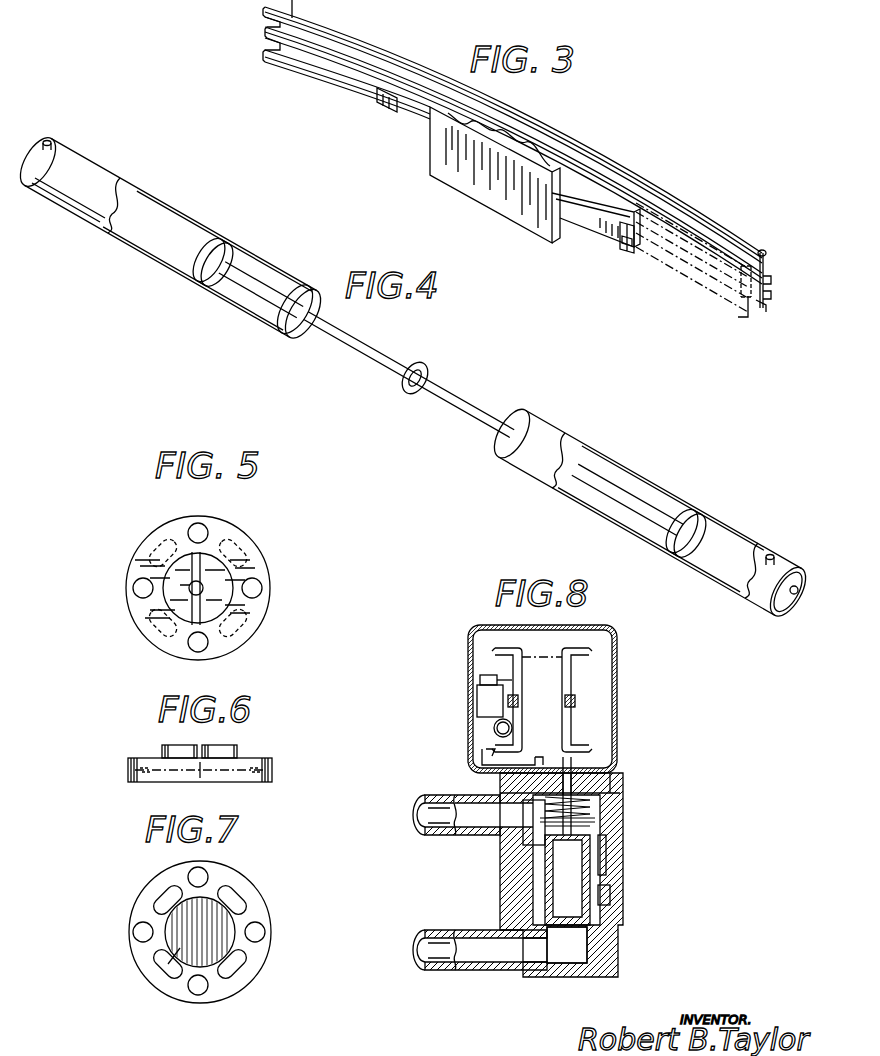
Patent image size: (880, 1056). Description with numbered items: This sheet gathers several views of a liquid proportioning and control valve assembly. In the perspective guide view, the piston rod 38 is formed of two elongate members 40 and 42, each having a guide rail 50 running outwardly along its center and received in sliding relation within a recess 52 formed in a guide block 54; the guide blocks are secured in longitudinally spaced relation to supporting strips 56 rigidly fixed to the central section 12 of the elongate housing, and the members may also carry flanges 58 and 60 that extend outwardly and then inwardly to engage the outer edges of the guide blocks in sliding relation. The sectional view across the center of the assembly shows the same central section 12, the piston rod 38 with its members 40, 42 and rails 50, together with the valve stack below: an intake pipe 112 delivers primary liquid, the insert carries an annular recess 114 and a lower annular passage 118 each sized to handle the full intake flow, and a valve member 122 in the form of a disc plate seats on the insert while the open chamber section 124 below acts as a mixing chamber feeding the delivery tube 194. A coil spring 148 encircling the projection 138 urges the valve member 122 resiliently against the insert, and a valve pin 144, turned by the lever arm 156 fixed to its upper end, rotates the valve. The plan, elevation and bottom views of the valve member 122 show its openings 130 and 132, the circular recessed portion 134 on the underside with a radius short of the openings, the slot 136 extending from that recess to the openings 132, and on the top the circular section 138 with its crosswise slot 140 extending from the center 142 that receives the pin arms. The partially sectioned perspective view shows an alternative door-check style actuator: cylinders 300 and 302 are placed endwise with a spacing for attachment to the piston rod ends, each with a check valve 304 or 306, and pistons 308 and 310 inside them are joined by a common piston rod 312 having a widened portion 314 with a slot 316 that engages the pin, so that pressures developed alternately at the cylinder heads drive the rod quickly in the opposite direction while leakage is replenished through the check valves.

In FIG. 3, the central section of the elongate housing 12 is at (463, 182).
In FIG. 8, the central section of the elongate housing 12 is at (617, 690).
In FIG. 3, the piston rod 38 is at (640, 215).
In FIG. 8, the piston rod 38 is at (575, 644).
In FIG. 3, the elongate member 40 is at (748, 317).
In FIG. 8, the elongate member 40 is at (522, 722).
In FIG. 3, the elongate member 42 is at (768, 293).
In FIG. 8, the elongate member 42 is at (568, 722).
In FIG. 3, the guide rail 50 is at (728, 295).
In FIG. 8, the guide rail 50 is at (514, 697).
In FIG. 3, the recess 52 is at (625, 235).
In FIG. 3, the guide block 54 is at (627, 226).
In FIG. 3, the supporting strips 56 is at (590, 232).
In FIG. 3, the flange 58 is at (767, 255).
In FIG. 3, the flange 60 is at (764, 304).
In FIG. 8, the intake pipe 112 is at (437, 827).
In FIG. 8, the annular recess 114 is at (603, 860).
In FIG. 8, the annular passage 118 is at (603, 895).
In FIG. 5, the valve member 122 is at (250, 523).
In FIG. 6, the valve member 122 is at (124, 786).
In FIG. 7, the valve member 122 is at (257, 989).
In FIG. 8, the valve member 122 is at (595, 819).
In FIG. 8, the open chamber section 124 is at (570, 955).
In FIG. 5, the openings 130 is at (255, 587).
In FIG. 6, the openings 130 is at (262, 760).
In FIG. 7, the openings 130 is at (258, 925).
In FIG. 5, the openings 132 is at (244, 618).
In FIG. 7, the openings 132 is at (240, 890).
In FIG. 6, the circular recessed portion 134 is at (233, 778).
In FIG. 7, the circular recessed portion 134 is at (187, 963).
In FIG. 7, the slot 136 is at (250, 947).
In FIG. 6, the circular section 138 is at (223, 750).
In FIG. 5, the crosswise slot 140 is at (228, 600).
In FIG. 5, the circular section at the center 142 is at (204, 586).
In FIG. 8, the valve pin 144 is at (575, 763).
In FIG. 8, the coil spring 148 is at (588, 803).
In FIG. 8, the lever arm 156 is at (543, 758).
In FIG. 8, the delivery tube 194 is at (440, 960).
In FIG. 4, the cylinder 300 is at (153, 194).
In FIG. 4, the cylinder 302 is at (727, 543).
In FIG. 4, the check valve 304 is at (50, 141).
In FIG. 4, the check valve 306 is at (772, 556).
In FIG. 4, the piston 308 is at (197, 254).
In FIG. 4, the piston 310 is at (694, 530).
In FIG. 4, the common piston rod 312 is at (473, 413).
In FIG. 4, the widened portion 314 is at (427, 380).
In FIG. 4, the slot 316 is at (400, 381).